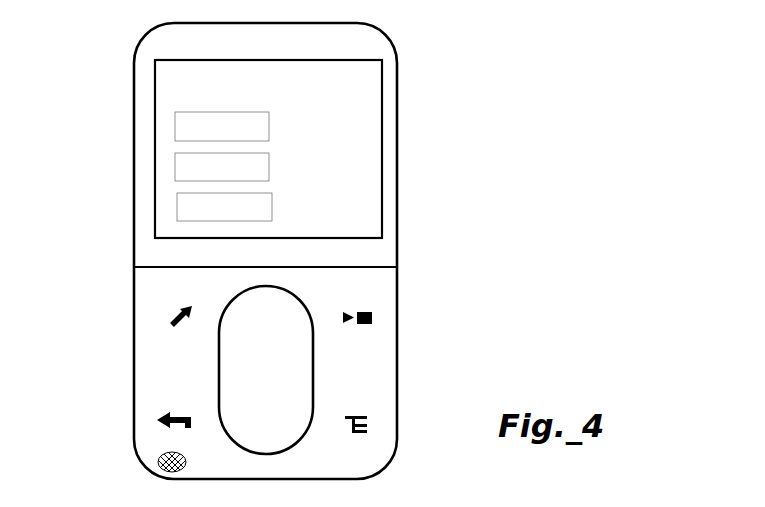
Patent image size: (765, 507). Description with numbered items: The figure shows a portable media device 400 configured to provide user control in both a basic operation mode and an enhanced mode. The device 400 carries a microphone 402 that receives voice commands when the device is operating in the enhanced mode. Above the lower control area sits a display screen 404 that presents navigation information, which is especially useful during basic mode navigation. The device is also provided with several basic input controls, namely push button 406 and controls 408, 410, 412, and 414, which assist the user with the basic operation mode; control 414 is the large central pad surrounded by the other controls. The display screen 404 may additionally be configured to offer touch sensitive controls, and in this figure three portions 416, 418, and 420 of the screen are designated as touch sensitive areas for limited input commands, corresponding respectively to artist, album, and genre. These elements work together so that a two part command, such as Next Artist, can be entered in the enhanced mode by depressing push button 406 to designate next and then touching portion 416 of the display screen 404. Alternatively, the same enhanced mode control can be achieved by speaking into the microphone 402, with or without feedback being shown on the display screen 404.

The portable media device 400 is at (412, 93).
The microphone 402 is at (158, 470).
The display screen 404 is at (360, 214).
The push button 406 is at (378, 311).
The basic input control 408 is at (158, 319).
The basic input control 410 is at (150, 419).
The basic input control 412 is at (377, 425).
The basic input control 414 is at (268, 378).
The touch sensitive portion for artist 416 is at (180, 121).
The touch sensitive portion for album 418 is at (180, 166).
The touch sensitive portion for genre 420 is at (180, 218).